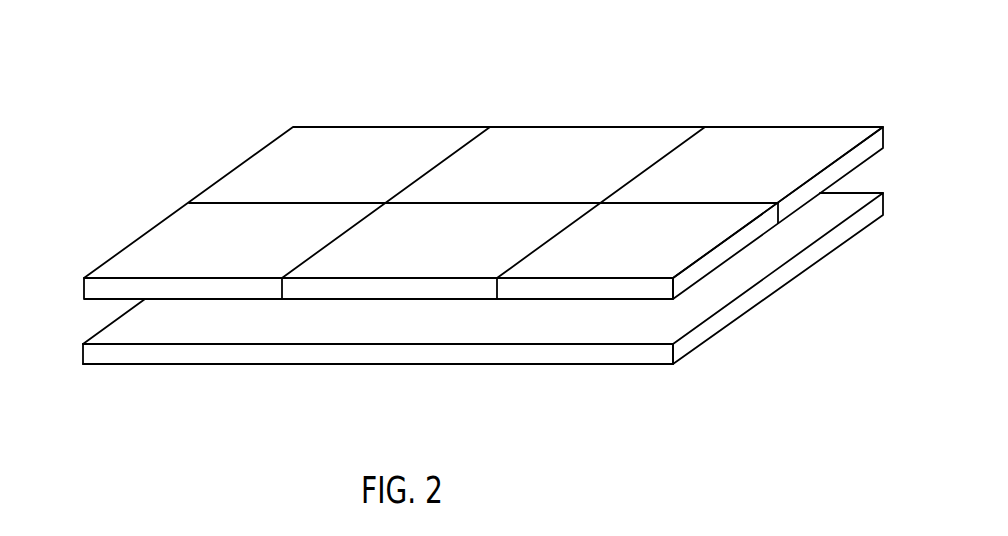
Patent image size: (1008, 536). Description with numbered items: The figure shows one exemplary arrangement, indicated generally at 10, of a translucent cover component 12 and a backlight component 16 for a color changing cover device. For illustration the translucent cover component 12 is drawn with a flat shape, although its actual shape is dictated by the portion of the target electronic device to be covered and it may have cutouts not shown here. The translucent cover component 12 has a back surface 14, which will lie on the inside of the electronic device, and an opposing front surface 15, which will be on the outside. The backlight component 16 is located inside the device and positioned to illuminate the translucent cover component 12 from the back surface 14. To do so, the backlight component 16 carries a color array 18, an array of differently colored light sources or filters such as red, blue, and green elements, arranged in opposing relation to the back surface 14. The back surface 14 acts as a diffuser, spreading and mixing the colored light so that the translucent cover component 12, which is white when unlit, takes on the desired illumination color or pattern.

The tile assembly 10 is at (792, 90).
The translucent cover component 12 is at (217, 355).
The back surface 14 is at (103, 337).
The front surface 15 is at (423, 365).
The backlight component 16 is at (385, 127).
The color array 18 is at (564, 147).